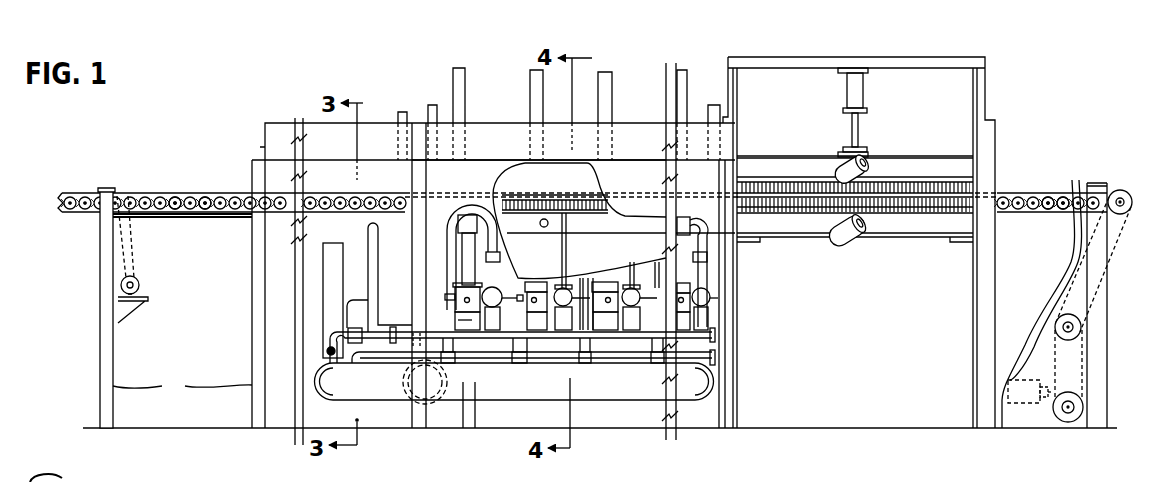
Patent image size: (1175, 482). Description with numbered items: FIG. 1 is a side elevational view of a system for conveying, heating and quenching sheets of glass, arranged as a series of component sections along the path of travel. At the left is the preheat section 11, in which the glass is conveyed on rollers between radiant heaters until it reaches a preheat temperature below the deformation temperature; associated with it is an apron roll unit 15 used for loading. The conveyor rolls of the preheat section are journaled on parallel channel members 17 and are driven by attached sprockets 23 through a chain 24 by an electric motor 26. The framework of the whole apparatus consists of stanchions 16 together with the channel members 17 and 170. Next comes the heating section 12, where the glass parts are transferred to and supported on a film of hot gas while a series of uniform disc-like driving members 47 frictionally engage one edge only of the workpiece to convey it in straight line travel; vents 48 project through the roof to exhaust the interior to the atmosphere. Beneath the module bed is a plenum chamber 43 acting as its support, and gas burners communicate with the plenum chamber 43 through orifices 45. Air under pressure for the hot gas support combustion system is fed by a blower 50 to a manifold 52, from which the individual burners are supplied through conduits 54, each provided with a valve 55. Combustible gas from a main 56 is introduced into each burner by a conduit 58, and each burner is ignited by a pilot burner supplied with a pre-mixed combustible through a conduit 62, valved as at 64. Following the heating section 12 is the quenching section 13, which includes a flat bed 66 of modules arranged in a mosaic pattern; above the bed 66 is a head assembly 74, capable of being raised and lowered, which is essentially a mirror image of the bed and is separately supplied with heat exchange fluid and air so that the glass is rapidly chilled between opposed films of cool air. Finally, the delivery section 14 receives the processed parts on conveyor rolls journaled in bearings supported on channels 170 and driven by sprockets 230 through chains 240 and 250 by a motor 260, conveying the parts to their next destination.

The preheat section 11 is at (276, 118).
The heating section 12 is at (645, 113).
The quenching section 13 is at (853, 53).
The delivery section 14 is at (1057, 181).
The apron roll unit 15 is at (222, 189).
The stanchions 16 is at (1113, 412).
The channel members 17 is at (226, 218).
The sprockets 23 is at (203, 210).
The chain 24 is at (134, 255).
The electric motor 26 is at (140, 286).
The plenum chamber 43 is at (605, 227).
The orifices 45 is at (548, 225).
The driving members 47 is at (580, 180).
The vents 48 is at (530, 101).
The blower 50 is at (333, 243).
The manifold 52 is at (388, 394).
The conduits 54 is at (462, 265).
The valve 55 is at (447, 318).
The main 56 is at (713, 343).
The conduit 58 is at (493, 245).
The conduit 62 is at (447, 238).
The valve 64 is at (447, 297).
The flat bed 66 is at (935, 205).
The head assembly 74 is at (913, 151).
The channel members 170 is at (1055, 212).
The sprockets 230 is at (1040, 194).
The chain 240 is at (1110, 255).
The chain 250 is at (1080, 375).
The motor 260 is at (1022, 404).